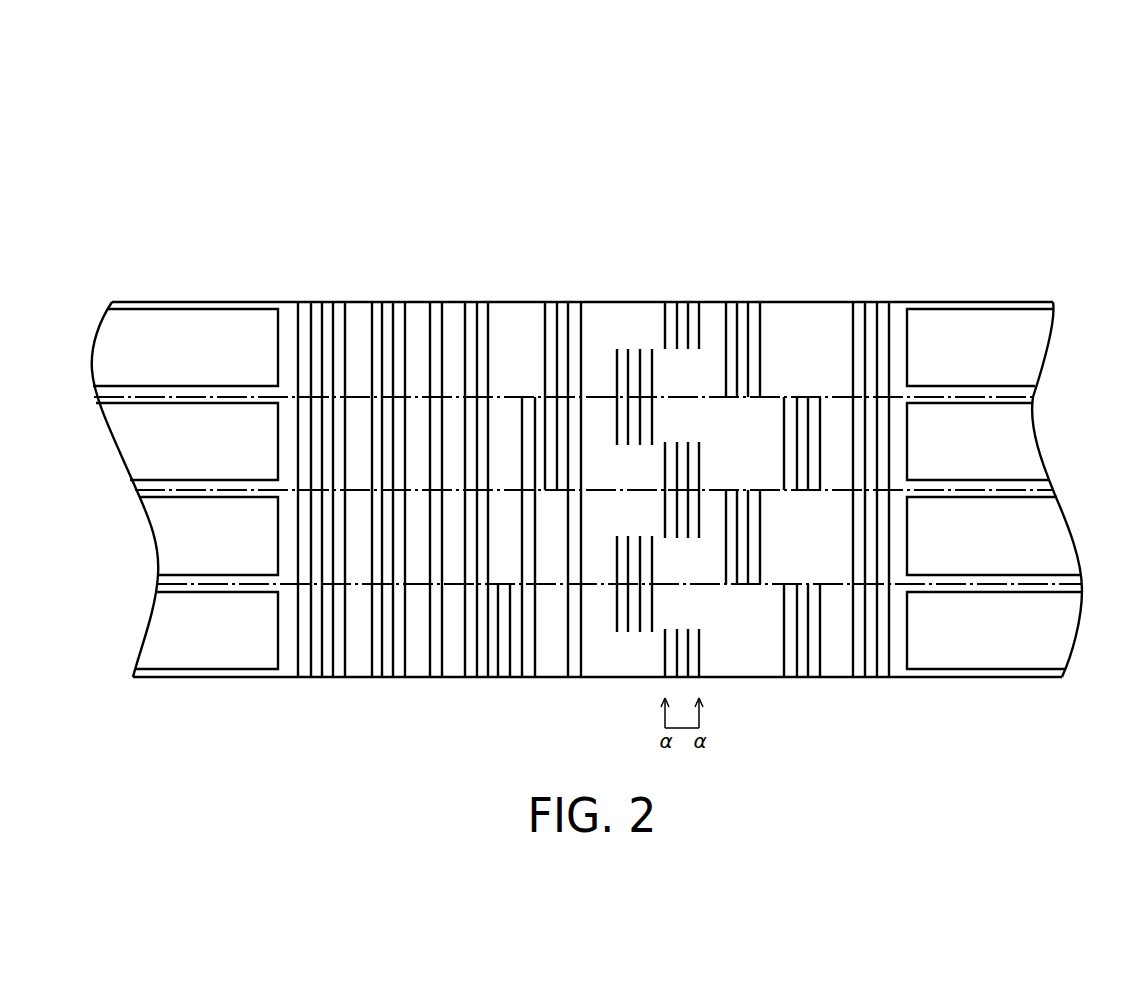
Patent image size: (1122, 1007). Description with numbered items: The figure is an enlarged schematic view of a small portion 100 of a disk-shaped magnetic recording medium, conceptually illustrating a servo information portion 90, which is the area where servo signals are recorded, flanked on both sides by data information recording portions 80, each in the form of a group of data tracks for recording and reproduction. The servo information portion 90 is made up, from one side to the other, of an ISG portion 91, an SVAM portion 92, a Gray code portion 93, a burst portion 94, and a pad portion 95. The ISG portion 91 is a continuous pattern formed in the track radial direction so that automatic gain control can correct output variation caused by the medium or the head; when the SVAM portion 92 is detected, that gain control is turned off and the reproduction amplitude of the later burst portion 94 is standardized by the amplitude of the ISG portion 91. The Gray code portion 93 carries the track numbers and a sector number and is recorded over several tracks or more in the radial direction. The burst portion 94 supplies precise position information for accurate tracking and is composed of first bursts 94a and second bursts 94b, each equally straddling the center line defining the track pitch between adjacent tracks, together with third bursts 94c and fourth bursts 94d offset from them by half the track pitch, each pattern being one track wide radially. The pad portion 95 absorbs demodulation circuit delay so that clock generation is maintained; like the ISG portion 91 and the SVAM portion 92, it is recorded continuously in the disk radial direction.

The small portion 100 is at (863, 115).
The data information recording portion 80 is at (105, 278).
The servo information portion 90 is at (289, 203).
The ISG portion 91 is at (292, 286).
The SVAM portion 92 is at (365, 286).
The Gray code portion 93 is at (580, 284).
The burst portion 94 is at (602, 250).
The first burst 94a is at (610, 291).
The second burst 94b is at (658, 291).
The third burst 94c is at (765, 291).
The fourth burst 94d is at (823, 291).
The pad portion 95 is at (848, 284).